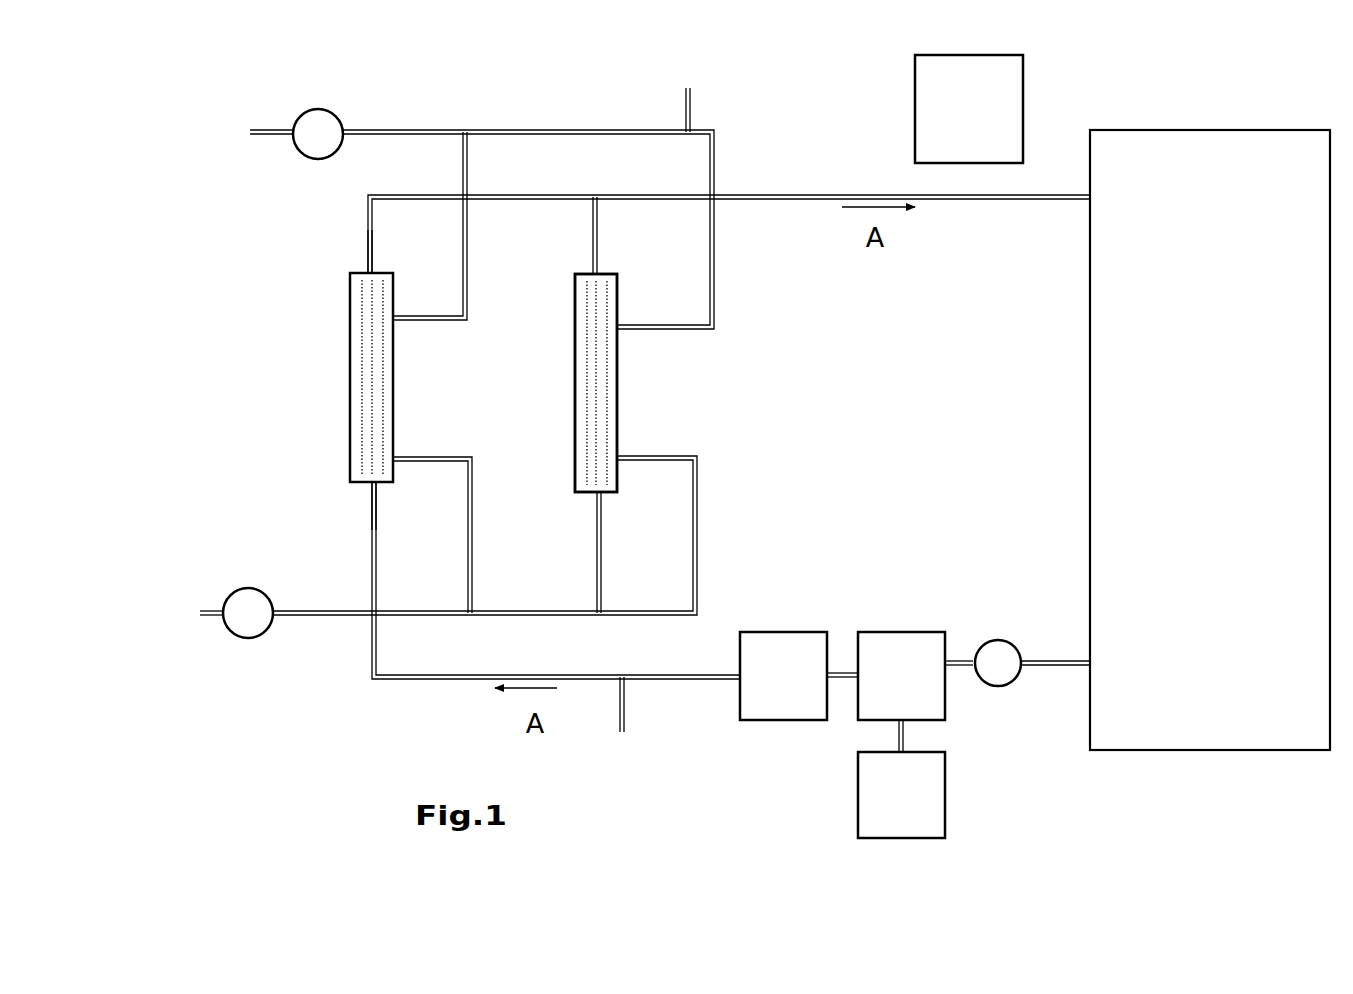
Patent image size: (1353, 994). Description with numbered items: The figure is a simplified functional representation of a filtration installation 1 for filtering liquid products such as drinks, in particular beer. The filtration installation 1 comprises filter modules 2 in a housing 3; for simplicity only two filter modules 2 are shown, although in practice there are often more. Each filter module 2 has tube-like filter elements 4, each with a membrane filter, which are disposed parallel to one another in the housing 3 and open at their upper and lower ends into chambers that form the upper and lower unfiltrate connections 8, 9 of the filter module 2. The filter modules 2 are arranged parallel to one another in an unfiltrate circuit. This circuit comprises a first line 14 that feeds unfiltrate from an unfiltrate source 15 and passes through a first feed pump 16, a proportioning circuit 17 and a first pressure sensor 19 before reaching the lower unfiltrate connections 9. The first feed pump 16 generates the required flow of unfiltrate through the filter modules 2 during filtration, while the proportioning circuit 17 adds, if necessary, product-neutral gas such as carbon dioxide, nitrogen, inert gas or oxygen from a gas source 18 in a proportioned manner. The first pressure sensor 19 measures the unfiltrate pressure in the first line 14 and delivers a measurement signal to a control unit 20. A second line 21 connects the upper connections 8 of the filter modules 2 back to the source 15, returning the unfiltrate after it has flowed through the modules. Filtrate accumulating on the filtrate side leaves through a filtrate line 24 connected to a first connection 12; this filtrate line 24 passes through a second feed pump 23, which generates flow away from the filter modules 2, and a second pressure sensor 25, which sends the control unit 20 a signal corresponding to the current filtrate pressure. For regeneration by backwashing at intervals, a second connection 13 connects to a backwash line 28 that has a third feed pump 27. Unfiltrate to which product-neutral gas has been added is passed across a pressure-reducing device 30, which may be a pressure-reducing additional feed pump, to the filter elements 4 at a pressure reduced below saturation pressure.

The filtration installation 1 is at (333, 757).
The filter module 2 is at (328, 395).
The housing 3 is at (617, 373).
The filter element 4 is at (362, 395).
The upper unfiltrate connection 8 is at (370, 262).
The lower unfiltrate connection 9 is at (373, 495).
The first connection 12 is at (425, 318).
The second connection 13 is at (416, 461).
The first line 14 is at (720, 677).
The unfiltrate source 15 is at (1197, 457).
The first feed pump 16 is at (998, 673).
The proportioning circuit 17 is at (887, 693).
The gas source 18 is at (887, 813).
The first pressure sensor 19 is at (615, 740).
The control unit 20 is at (957, 125).
The second line 21 is at (788, 195).
The second feed pump 23 is at (315, 122).
The filtrate line 24 is at (518, 132).
The second pressure sensor 25 is at (692, 98).
The third feed pump 27 is at (247, 588).
The backwash line 28 is at (695, 578).
The pressure-reducing device 30 is at (762, 693).